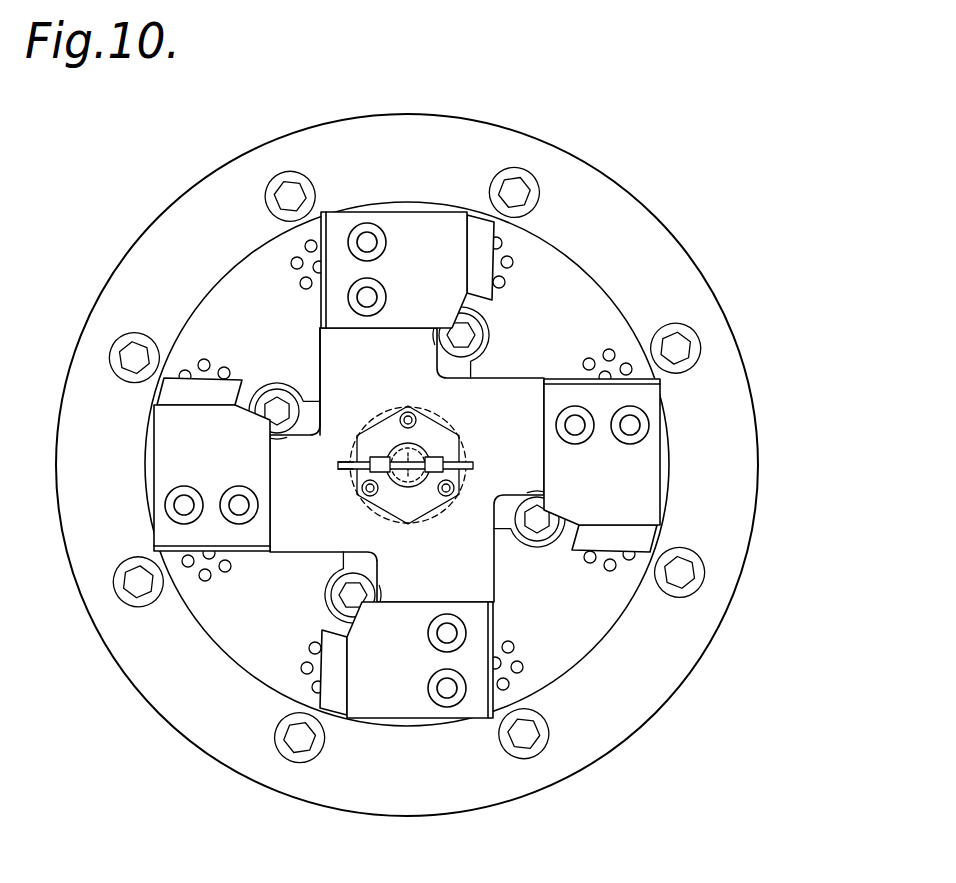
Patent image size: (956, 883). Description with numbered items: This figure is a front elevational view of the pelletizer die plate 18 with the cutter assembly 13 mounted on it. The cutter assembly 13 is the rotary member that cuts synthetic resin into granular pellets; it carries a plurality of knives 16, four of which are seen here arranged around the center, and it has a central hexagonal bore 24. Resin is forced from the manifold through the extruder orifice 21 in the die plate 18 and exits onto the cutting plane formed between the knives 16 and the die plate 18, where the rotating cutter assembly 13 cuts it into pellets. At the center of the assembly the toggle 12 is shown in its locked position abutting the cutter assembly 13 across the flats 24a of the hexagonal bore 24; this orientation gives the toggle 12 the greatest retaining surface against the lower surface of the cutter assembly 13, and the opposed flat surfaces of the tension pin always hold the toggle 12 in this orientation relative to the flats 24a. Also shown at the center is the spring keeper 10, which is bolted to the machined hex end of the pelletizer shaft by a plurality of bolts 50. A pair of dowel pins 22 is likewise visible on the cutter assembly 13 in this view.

The spring keeper 10 is at (408, 492).
The toggle 12 is at (319, 498).
The cutter assembly 13 is at (483, 528).
The knife 16 is at (437, 287).
The pelletizer die plate 18 is at (175, 267).
The extruder orifice 21 is at (513, 262).
The dowel pins 22 is at (429, 444).
The hexagonal bore 24 is at (320, 382).
The flats 24a is at (339, 554).
The bolts 50 is at (380, 388).